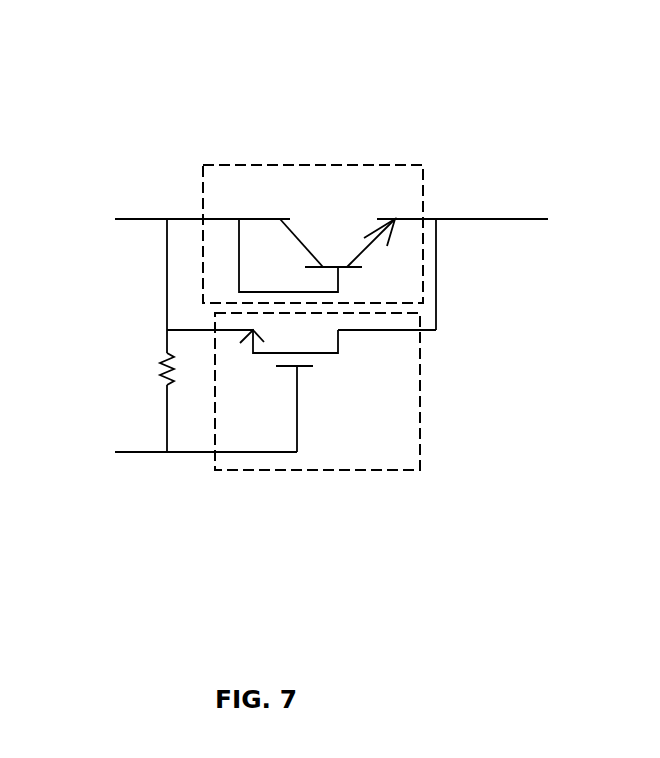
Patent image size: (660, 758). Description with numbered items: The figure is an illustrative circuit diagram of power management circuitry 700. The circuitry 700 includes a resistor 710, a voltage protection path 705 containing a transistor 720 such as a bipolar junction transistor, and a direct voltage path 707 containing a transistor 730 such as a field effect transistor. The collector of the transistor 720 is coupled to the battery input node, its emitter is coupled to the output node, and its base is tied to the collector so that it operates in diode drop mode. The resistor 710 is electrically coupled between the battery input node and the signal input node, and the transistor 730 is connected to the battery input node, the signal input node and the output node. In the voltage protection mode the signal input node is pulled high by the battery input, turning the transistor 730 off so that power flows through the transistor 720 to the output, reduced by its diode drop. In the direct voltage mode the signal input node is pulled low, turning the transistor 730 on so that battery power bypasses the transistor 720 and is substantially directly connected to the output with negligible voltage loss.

The power management circuitry 700 is at (350, 46).
The voltage protection path 705 is at (422, 173).
The direct voltage path 707 is at (422, 377).
The resistor 710 is at (159, 366).
The transistor 720 is at (325, 243).
The transistor 730 is at (317, 392).